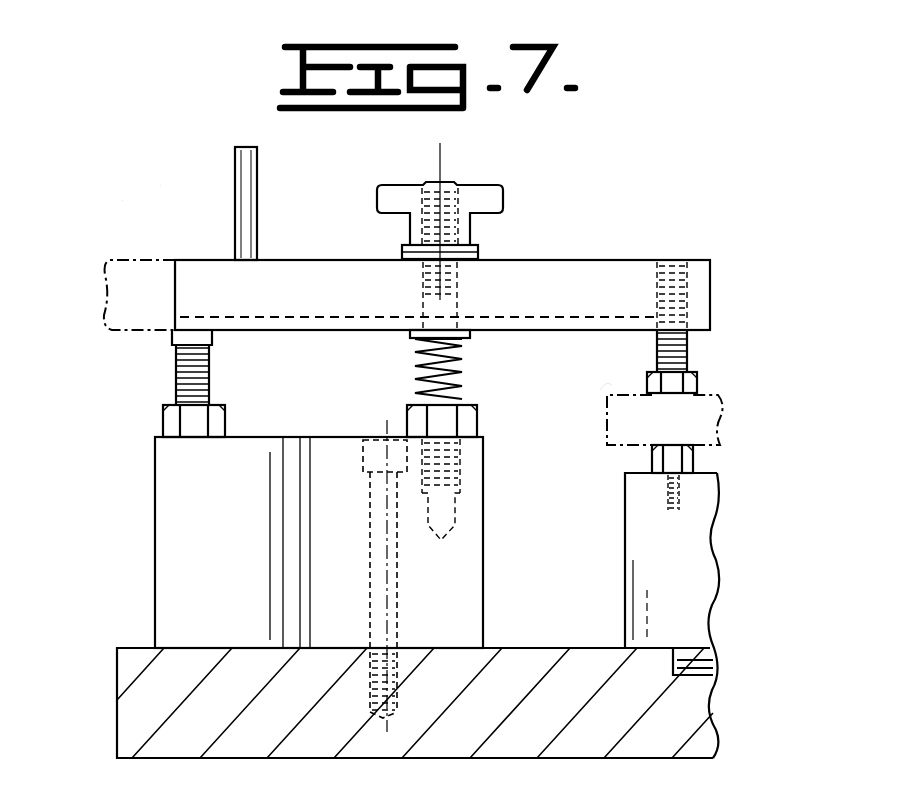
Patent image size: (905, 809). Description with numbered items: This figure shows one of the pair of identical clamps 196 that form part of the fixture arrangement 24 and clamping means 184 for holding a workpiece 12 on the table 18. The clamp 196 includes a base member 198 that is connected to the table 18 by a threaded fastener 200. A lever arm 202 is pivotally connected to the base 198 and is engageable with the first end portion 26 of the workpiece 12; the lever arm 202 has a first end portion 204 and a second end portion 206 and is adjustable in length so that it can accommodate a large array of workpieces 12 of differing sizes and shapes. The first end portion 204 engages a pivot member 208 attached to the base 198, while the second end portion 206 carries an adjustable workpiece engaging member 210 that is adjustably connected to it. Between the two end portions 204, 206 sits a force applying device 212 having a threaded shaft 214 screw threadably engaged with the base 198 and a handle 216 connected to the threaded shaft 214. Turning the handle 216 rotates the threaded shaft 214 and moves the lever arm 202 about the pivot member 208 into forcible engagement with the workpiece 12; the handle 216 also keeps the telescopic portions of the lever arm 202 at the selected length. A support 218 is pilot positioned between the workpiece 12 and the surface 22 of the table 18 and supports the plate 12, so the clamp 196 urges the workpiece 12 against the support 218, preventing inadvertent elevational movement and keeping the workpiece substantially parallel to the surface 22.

The workpiece 12 is at (720, 400).
The table 18 is at (704, 701).
The surface of the table 22 is at (142, 648).
The fixture arrangement 24 is at (122, 201).
The first end portion of the workpiece 26 is at (604, 386).
The clamping means 184 is at (160, 186).
The clamp 196 is at (130, 455).
The base member 198 is at (319, 542).
The threaded fastener 200 is at (370, 440).
The lever arm 202 is at (572, 272).
The first end portion of the lever arm 204 is at (185, 298).
The second end portion of the lever arm 206 is at (700, 300).
The pivot member 208 is at (176, 366).
The adjustable workpiece engaging member 210 is at (690, 380).
The force applying device 212 is at (474, 237).
The threaded shaft 214 is at (460, 379).
The handle 216 is at (496, 201).
The support 218 is at (700, 542).